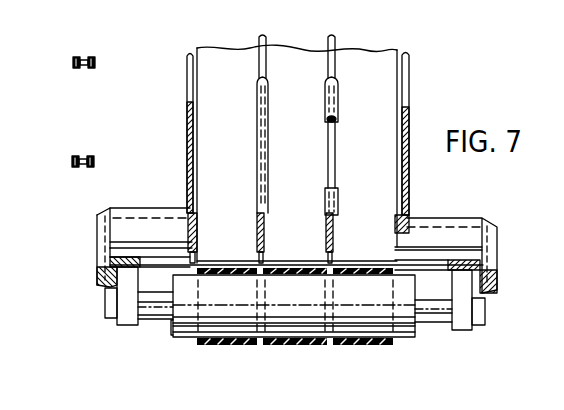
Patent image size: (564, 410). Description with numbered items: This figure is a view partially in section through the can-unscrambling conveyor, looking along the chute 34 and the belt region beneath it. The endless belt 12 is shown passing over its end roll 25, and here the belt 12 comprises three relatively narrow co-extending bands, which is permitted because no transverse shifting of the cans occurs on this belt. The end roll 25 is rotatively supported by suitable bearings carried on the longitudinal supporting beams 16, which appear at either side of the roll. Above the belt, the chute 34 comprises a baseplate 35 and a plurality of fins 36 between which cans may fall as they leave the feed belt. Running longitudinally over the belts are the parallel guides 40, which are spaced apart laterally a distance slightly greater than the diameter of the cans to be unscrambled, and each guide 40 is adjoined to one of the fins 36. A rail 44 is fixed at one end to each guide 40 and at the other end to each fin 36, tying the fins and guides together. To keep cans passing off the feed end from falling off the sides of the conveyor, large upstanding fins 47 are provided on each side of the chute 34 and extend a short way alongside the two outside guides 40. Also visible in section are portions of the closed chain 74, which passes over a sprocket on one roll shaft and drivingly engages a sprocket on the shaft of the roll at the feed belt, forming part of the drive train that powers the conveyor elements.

The endless belt 12 is at (237, 346).
The longitudinal supporting beam 16 is at (113, 263).
The end roll 25 is at (397, 337).
The chute 34 is at (415, 177).
The baseplate 35 is at (220, 125).
The fin 36 is at (265, 38).
The guide 40 is at (197, 240).
The rail 44 is at (338, 101).
The upstanding fin 47 is at (189, 81).
The closed chain 74 is at (73, 61).